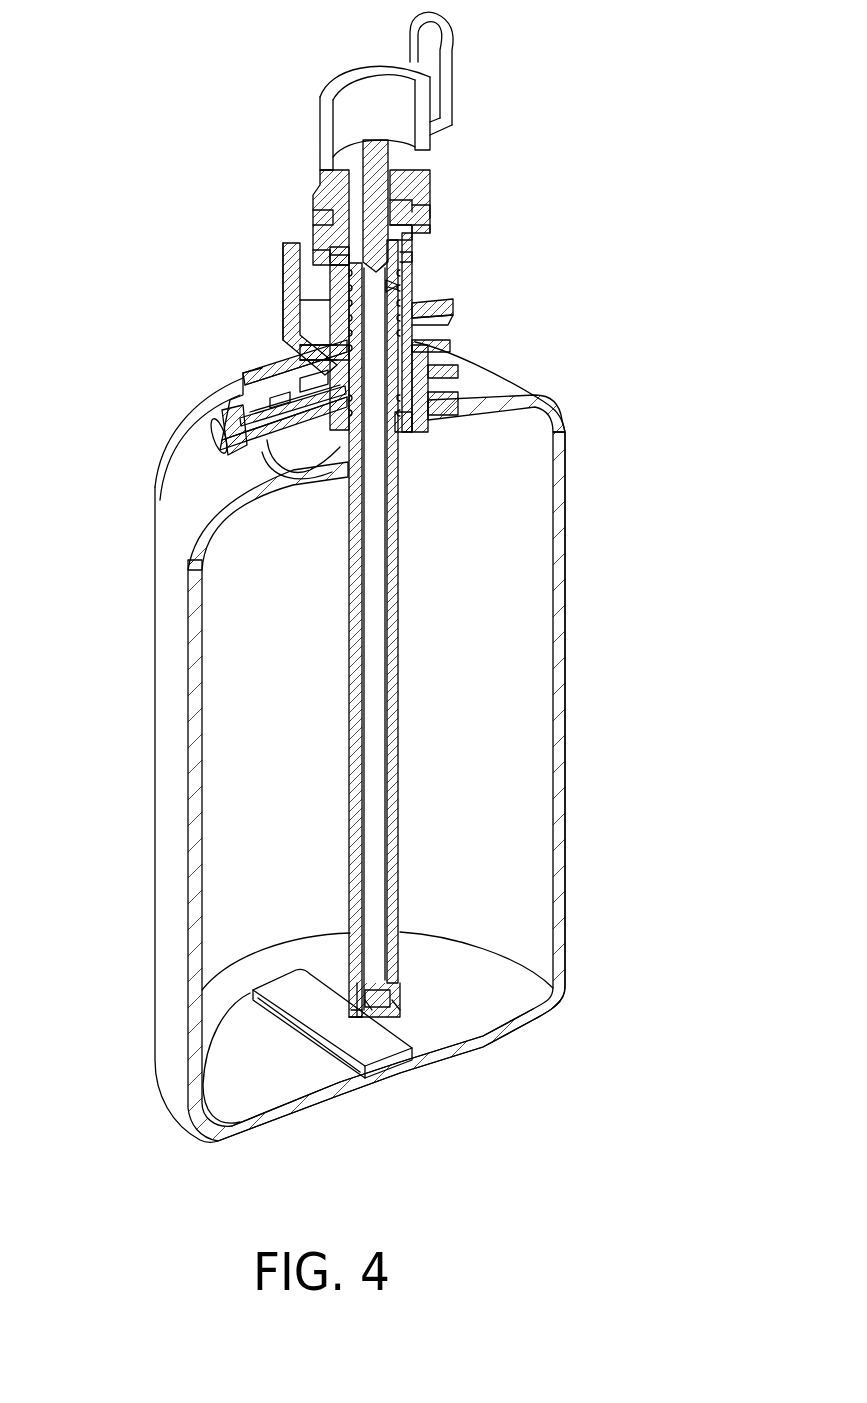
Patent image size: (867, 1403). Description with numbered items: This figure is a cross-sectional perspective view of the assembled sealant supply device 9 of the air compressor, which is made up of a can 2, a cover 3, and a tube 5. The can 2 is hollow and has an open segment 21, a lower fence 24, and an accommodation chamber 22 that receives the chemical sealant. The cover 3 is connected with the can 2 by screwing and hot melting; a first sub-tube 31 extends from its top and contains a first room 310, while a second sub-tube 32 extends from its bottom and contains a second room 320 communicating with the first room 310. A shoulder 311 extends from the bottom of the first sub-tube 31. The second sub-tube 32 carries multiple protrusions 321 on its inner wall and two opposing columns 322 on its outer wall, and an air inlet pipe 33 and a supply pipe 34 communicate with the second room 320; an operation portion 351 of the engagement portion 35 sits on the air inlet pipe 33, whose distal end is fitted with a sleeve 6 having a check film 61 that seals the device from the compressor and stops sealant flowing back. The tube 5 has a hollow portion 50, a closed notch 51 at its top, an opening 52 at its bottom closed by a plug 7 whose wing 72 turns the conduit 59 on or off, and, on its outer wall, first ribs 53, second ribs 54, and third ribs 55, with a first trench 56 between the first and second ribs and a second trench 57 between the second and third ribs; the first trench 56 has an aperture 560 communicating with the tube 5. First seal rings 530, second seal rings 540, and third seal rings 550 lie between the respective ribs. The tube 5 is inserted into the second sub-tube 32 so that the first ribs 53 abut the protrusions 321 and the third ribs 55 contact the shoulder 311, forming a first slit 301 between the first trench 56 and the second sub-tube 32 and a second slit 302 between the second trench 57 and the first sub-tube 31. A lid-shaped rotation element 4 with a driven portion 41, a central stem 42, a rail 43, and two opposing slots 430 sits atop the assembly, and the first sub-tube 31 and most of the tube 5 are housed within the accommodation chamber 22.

The can 2 is at (422, 769).
The cover 3 is at (439, 332).
The rotation element 4 is at (416, 142).
The tube 5 is at (505, 628).
The sleeve 6 is at (198, 410).
The plug 7 is at (447, 1045).
The sealant supply device 9 is at (106, 202).
The open segment 21 is at (473, 376).
The accommodation chamber 22 is at (523, 848).
The lower fence 24 is at (263, 1120).
The first sub-tube 31 is at (386, 476).
The second sub-tube 32 is at (420, 243).
The air inlet pipe 33 is at (240, 413).
The supply pipe 34 is at (445, 303).
The engagement portion 35 is at (332, 311).
The driven portion 41 is at (423, 40).
The central stem 42 is at (373, 193).
The rail 43 is at (320, 220).
The hollow portion 50 is at (375, 662).
The closed notch 51 is at (427, 227).
The opening 52 is at (377, 960).
The first ribs 53 is at (337, 258).
The second ribs 54 is at (337, 305).
The third ribs 55 is at (417, 425).
The first trench 56 is at (307, 297).
The second trench 57 is at (250, 373).
The conduit 59 is at (365, 995).
The check film 61 is at (213, 447).
The wing 72 is at (367, 1000).
The first slit 301 is at (420, 273).
The second slit 302 is at (420, 345).
The first room 310 is at (465, 405).
The shoulder 311 is at (403, 427).
The second room 320 is at (420, 337).
The protrusions 321 is at (323, 257).
The columns 322 is at (422, 218).
The operation portion 351 is at (287, 270).
The slots 430 is at (423, 230).
The first seal rings 530 is at (420, 253).
The second seal rings 540 is at (347, 343).
The third seal rings 550 is at (233, 487).
The aperture 560 is at (393, 290).